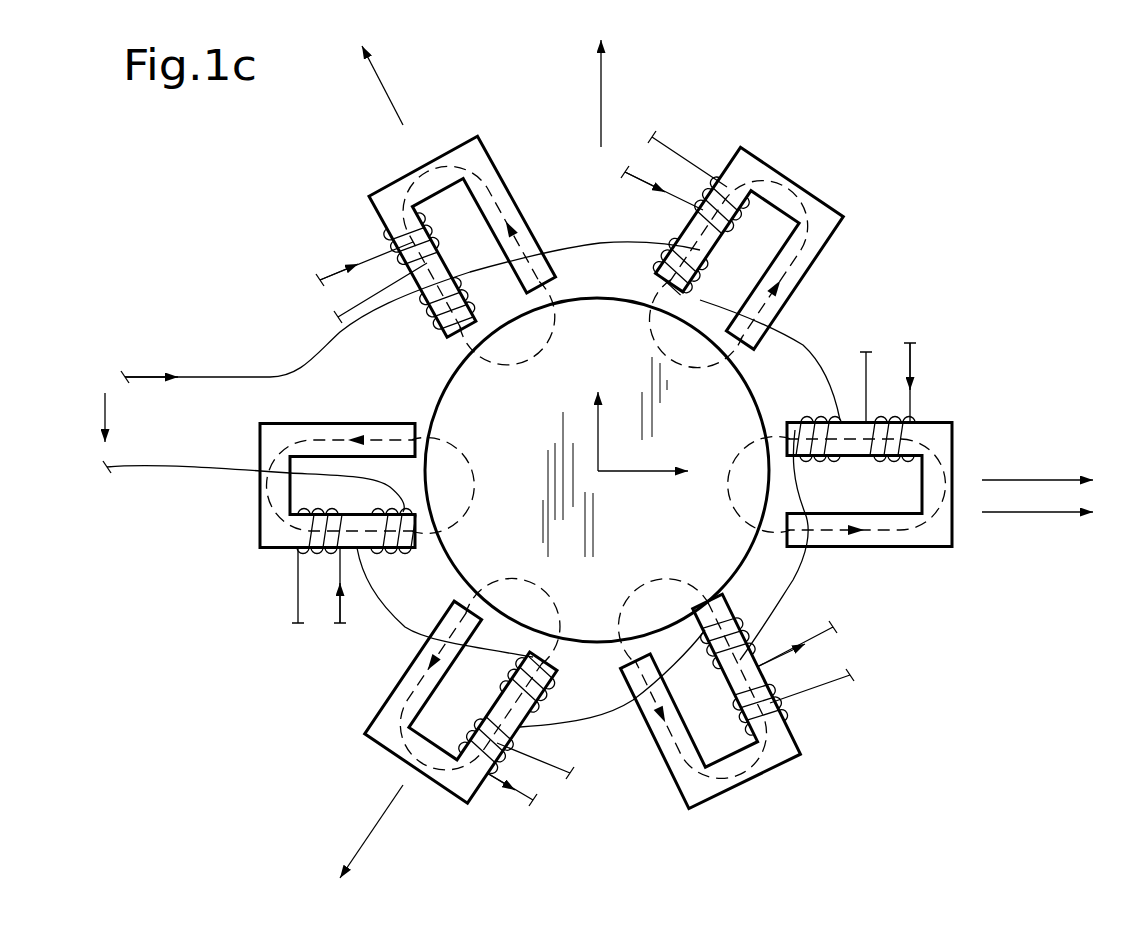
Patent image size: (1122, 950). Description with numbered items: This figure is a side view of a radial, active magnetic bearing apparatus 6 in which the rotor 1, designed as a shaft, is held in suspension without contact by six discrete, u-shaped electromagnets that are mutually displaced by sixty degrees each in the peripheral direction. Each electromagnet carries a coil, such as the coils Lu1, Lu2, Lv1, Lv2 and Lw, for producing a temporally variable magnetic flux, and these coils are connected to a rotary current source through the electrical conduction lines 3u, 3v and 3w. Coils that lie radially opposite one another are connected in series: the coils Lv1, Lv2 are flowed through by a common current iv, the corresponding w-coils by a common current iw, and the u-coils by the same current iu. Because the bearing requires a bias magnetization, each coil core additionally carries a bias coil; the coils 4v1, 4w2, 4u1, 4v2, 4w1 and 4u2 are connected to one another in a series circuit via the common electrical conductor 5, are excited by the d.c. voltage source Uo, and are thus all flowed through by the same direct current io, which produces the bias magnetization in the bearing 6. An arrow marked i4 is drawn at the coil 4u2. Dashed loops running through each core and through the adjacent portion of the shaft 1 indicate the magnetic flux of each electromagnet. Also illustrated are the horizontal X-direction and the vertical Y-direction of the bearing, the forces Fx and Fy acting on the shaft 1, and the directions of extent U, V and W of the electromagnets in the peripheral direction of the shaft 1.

The rotor 1 is at (511, 561).
The electrical conductor 5 is at (275, 375).
The magnetic bearing apparatus 6 is at (932, 153).
The electrical conduction line 3u is at (913, 357).
The electrical conduction line 3v is at (367, 250).
The electrical conduction line 3w is at (670, 150).
The bias coil 4u1 is at (807, 420).
The bias coil 4u2 is at (398, 548).
The bias coil 4v1 is at (440, 308).
The bias coil 4v2 is at (730, 615).
The bias coil 4w1 is at (485, 690).
The bias coil 4w2 is at (662, 262).
The electromagnet coil Lu1 is at (885, 494).
The electromagnet coil Lu2 is at (322, 501).
The electromagnet coil Lv1 is at (406, 238).
The electromagnet coil Lv2 is at (757, 694).
The electromagnet coil Lw is at (735, 219).
The direct current io is at (155, 351).
The current iu is at (926, 372).
The current iv is at (558, 452).
The current iw is at (576, 501).
The current 4 i4 is at (354, 604).
The d.c. voltage source Uo is at (83, 420).
The direction of extent u U is at (1037, 460).
The horizontal X-direction X is at (1037, 531).
The direction of extent v V is at (382, 77).
The direction of extent w W is at (356, 831).
The vertical Y-direction Y is at (617, 87).
The force Fx is at (645, 447).
The force Fy is at (575, 415).